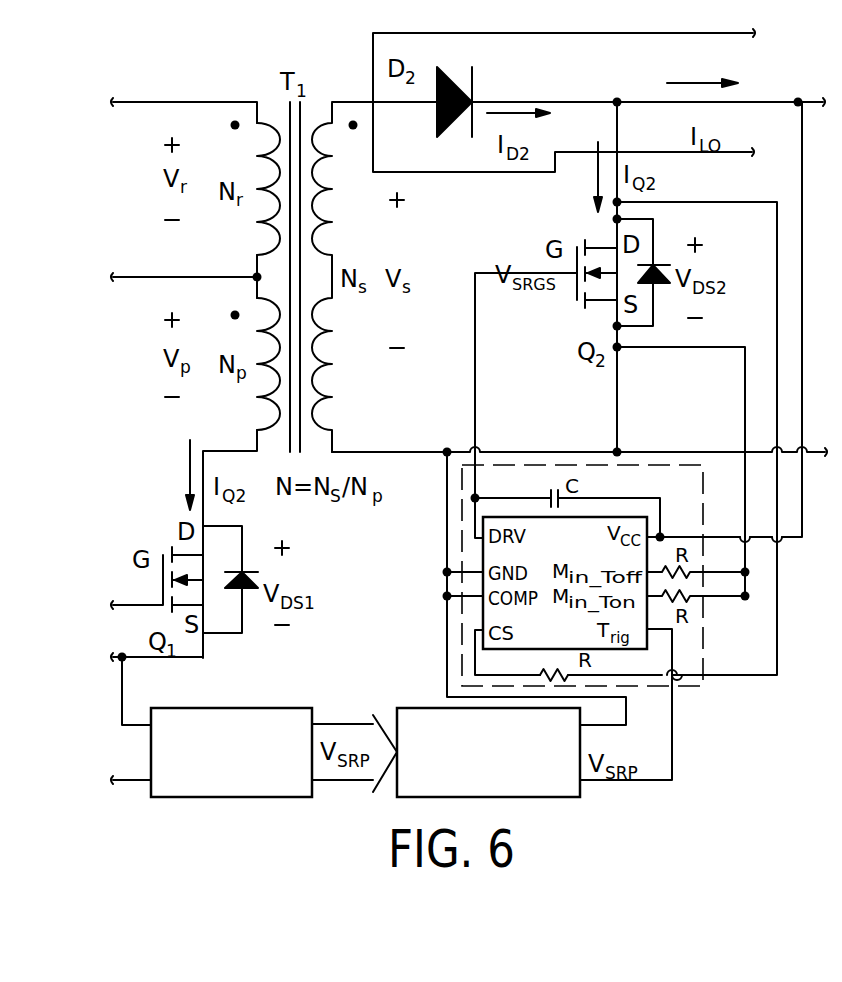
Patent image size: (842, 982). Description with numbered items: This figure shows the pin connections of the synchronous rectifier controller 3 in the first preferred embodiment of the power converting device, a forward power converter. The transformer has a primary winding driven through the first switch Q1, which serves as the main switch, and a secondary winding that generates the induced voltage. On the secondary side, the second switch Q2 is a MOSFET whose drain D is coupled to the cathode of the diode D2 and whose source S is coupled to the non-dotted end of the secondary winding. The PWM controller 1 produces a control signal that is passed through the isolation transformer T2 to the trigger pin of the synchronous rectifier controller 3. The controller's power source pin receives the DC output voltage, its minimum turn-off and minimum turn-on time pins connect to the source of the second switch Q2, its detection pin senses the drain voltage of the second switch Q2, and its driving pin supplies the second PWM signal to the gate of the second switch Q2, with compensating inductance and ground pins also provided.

The pulse-width modulation (PWM) controller 1 is at (278, 708).
The synchronous rectifier controller 3 is at (705, 628).
The isolation transformer T2 is at (417, 708).
The first switch Q1 is at (158, 579).
The second switch Q2 is at (546, 389).
The diode D2 is at (454, 102).